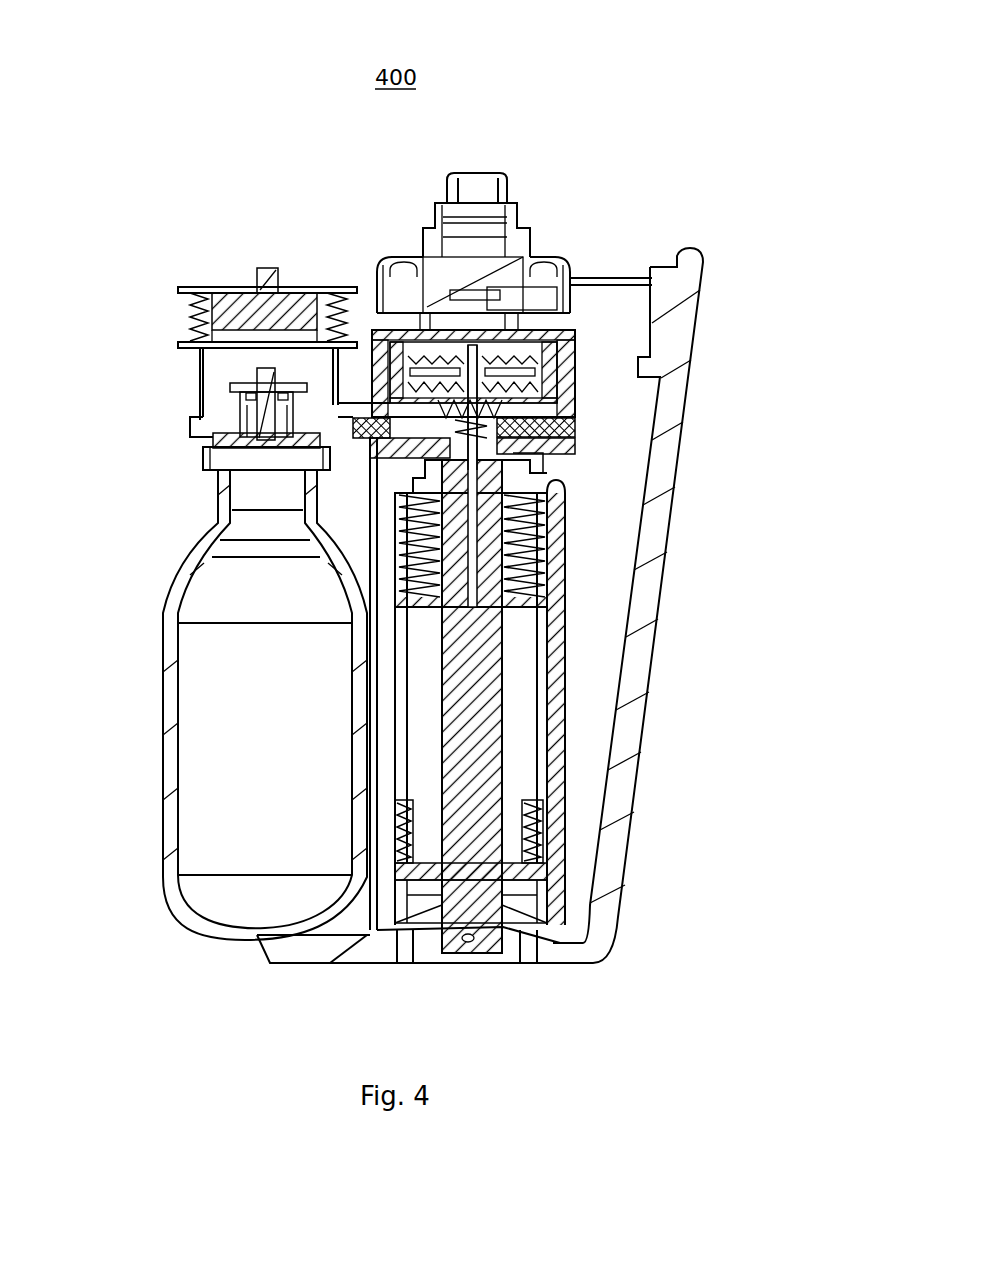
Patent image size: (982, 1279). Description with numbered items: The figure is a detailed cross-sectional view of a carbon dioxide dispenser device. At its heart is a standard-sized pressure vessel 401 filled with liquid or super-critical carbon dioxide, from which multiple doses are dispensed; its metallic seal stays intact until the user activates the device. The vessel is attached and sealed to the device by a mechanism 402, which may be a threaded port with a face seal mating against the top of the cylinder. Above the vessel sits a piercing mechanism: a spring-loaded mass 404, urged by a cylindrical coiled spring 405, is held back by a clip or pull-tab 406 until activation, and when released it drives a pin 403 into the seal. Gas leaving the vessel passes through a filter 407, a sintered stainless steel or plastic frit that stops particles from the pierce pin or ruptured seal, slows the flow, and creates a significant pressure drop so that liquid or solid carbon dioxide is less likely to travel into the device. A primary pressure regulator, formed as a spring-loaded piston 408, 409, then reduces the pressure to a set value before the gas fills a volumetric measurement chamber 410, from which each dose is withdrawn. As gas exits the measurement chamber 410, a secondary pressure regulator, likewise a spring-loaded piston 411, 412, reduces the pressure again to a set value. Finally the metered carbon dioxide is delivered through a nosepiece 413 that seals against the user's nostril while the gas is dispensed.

The pressure vessel 401 is at (163, 625).
The cylinder attachment and sealing mechanism 402 is at (250, 438).
The pin 403 is at (243, 408).
The spring-loaded mass 404 is at (247, 343).
The cylindrical coiled spring 405 is at (185, 312).
The clip or pull-tab 406 is at (250, 277).
The filter 407 is at (353, 433).
The spring-loaded piston of primary regulator 408 is at (510, 508).
The spring-loaded piston of primary regulator 409 is at (510, 552).
The measurement chamber 410 is at (515, 678).
The spring-loaded piston of secondary regulator 411 is at (565, 365).
The spring-loaded piston of secondary regulator 412 is at (520, 380).
The nosepiece 413 is at (517, 203).